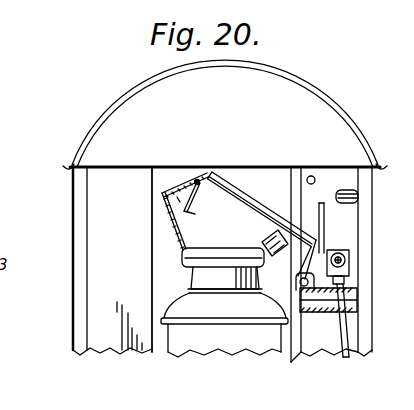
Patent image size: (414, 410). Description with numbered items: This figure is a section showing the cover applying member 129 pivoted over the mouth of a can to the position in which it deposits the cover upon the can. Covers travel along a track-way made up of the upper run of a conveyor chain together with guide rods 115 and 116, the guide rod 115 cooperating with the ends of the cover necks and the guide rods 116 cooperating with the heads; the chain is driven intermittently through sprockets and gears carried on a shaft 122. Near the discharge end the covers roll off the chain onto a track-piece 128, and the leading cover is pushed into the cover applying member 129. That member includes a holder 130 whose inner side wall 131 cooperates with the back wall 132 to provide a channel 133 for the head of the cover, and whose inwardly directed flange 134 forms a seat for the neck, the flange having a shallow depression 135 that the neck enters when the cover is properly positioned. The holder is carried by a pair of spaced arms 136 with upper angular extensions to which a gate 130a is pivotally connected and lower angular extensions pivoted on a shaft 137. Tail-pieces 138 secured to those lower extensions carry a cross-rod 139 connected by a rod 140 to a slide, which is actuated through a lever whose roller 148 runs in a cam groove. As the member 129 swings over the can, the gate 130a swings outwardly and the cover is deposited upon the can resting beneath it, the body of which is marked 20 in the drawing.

The bottle body 20 is at (224, 340).
The guide rod 115 is at (312, 176).
The guide rod 116 is at (357, 198).
The shaft 122 is at (95, 405).
The track-piece 128 is at (325, 218).
The cover applying member 129 is at (253, 180).
The holder 130 is at (282, 214).
The gate 130a is at (166, 203).
The inner side wall 131 is at (271, 237).
The back wall 132 is at (253, 206).
The channel 133 is at (300, 238).
The inwardly directed flange 134 is at (263, 247).
The shallow depression 135 is at (257, 277).
The spaced arms 136 is at (252, 180).
The shaft 137 is at (298, 284).
The tail-pieces 138 is at (349, 267).
The cross-rod 139 is at (343, 255).
The rod 140 is at (345, 358).
The roller 148 is at (140, 405).